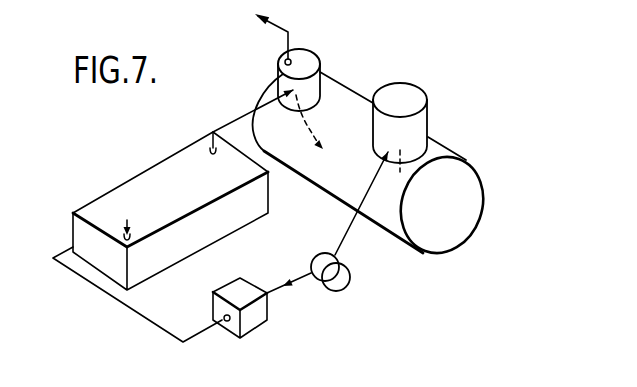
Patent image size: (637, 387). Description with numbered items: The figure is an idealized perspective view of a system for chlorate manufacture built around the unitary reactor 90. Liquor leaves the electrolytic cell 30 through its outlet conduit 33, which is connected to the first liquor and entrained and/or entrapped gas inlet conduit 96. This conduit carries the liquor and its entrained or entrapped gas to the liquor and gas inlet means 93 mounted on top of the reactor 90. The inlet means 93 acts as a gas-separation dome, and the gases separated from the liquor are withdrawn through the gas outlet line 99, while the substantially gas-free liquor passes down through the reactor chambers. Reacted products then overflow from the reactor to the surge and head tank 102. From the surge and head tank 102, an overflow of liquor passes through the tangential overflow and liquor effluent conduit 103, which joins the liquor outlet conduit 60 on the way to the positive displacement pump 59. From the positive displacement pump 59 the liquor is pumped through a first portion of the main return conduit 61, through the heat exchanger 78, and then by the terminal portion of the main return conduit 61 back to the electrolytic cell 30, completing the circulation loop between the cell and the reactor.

The electrolytic cell 30 is at (133, 188).
The outlet conduit 33 is at (210, 146).
The first liquor and entrained and/or entrapped gas inlet conduit 96 is at (239, 116).
The gas outlet line 99 is at (287, 33).
The liquor and entrained and/or entrapped gas inlet means 93 is at (312, 88).
The unitary reactor 90 is at (345, 93).
The surge and head tank 102 is at (420, 130).
The tangential overflow and liquor effluent conduit 103 is at (400, 146).
The liquor outlet conduit 60 is at (345, 243).
The positive displacement pump 59 is at (349, 279).
The main return conduit 61 is at (140, 316).
The heat exchanger 78 is at (258, 322).